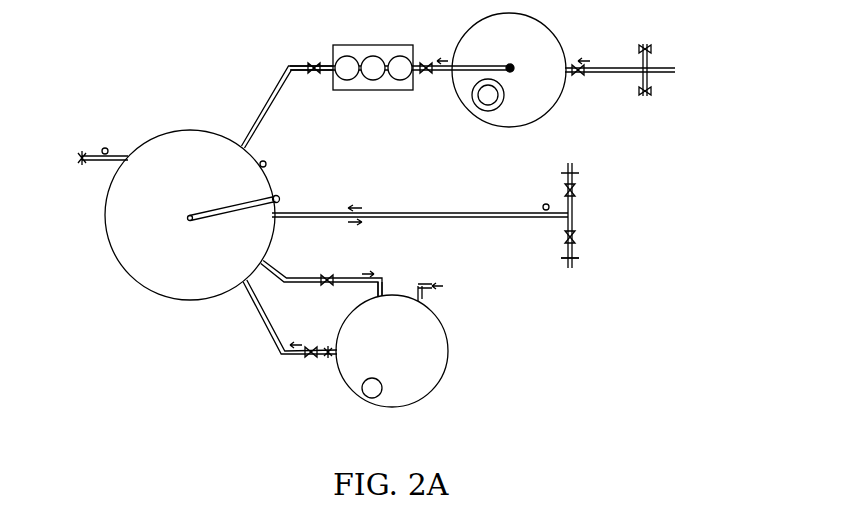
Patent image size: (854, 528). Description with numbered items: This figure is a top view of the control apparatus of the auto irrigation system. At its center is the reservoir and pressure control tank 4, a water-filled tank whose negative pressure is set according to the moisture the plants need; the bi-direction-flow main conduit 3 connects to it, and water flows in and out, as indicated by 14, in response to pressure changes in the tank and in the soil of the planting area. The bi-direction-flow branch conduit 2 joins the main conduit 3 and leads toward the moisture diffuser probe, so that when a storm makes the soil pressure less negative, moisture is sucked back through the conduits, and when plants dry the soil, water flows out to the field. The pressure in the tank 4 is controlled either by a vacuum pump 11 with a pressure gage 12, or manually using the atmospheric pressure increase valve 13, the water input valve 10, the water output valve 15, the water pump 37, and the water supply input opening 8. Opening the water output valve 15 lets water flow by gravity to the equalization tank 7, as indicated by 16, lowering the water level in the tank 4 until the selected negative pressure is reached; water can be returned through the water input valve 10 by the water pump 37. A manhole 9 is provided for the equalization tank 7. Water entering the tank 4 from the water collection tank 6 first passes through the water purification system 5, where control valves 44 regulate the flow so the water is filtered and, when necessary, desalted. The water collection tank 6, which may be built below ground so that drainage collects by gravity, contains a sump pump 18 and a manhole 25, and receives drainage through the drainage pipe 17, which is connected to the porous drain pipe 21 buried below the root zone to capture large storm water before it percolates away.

The bi-direction-flow branch conduit 2 is at (568, 262).
The bi-direction-flow main conduit 3 is at (560, 237).
The reservoir and pressure control tank 4 is at (113, 196).
The water purification system 5 is at (354, 92).
The water collection tank 6 is at (497, 128).
The equalization tank 7 is at (450, 348).
The water supply input opening 8 is at (435, 286).
The manhole 9 is at (412, 382).
The water input valve 10 is at (313, 348).
The vacuum pump 11 is at (91, 153).
The pressure gage 12 is at (107, 148).
The atmospheric pressure increase valve 13 is at (282, 203).
The water flow in and out 14 is at (357, 210).
The water output valve 15 is at (324, 276).
The water flow to equalization tank 16 is at (378, 278).
The drainage pipe 17 is at (590, 62).
The sump pump 18 is at (510, 64).
The porous drain pipe 21 is at (661, 73).
The manhole 25 is at (557, 101).
The water pump 37 is at (329, 358).
The control valves 44 is at (308, 62).